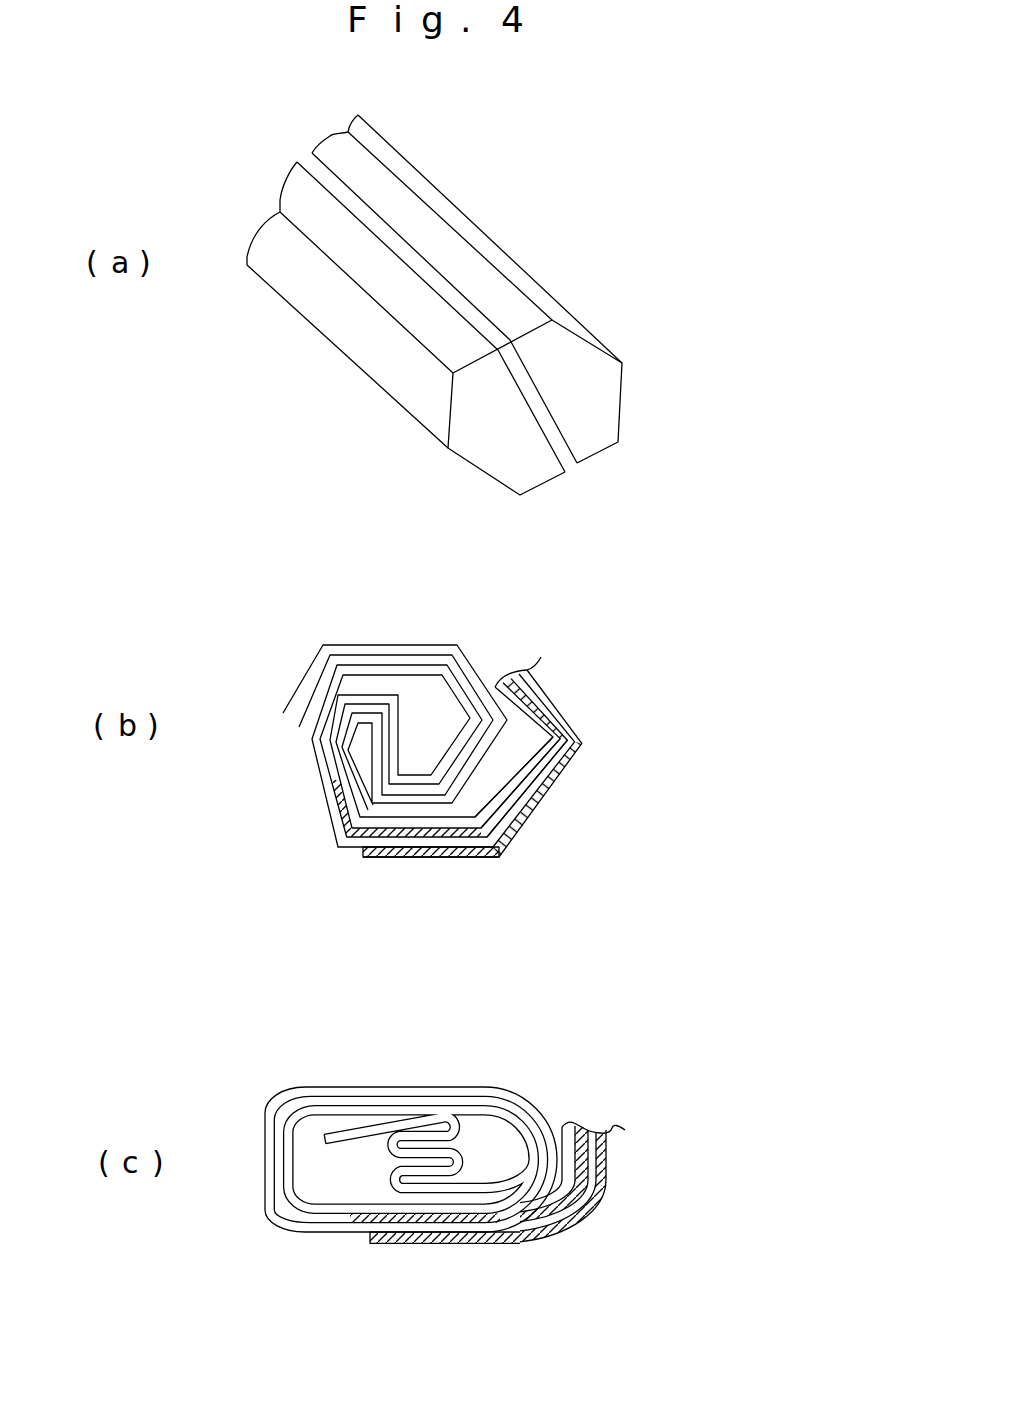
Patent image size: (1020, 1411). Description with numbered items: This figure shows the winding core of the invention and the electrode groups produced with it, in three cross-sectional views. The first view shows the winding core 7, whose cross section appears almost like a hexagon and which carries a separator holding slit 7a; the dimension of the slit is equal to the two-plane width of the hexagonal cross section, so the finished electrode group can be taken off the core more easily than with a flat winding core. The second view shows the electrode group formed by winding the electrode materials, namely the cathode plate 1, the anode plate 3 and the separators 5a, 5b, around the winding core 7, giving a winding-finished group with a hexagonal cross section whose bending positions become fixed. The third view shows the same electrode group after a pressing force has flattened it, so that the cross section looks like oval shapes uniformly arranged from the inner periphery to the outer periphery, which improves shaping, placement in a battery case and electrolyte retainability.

The winding core 7 is at (593, 390).
The separator holding slit 7a is at (537, 407).
The cathode plate 1 is at (502, 805).
The anode plate 3 is at (556, 771).
The separator 5a is at (424, 1292).
The separator 5b is at (500, 1312).